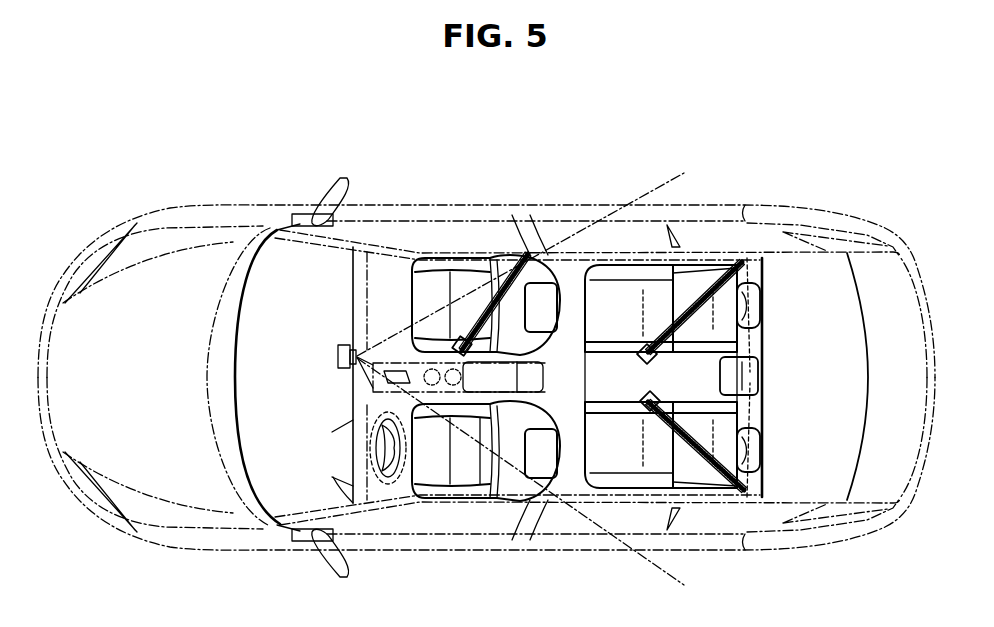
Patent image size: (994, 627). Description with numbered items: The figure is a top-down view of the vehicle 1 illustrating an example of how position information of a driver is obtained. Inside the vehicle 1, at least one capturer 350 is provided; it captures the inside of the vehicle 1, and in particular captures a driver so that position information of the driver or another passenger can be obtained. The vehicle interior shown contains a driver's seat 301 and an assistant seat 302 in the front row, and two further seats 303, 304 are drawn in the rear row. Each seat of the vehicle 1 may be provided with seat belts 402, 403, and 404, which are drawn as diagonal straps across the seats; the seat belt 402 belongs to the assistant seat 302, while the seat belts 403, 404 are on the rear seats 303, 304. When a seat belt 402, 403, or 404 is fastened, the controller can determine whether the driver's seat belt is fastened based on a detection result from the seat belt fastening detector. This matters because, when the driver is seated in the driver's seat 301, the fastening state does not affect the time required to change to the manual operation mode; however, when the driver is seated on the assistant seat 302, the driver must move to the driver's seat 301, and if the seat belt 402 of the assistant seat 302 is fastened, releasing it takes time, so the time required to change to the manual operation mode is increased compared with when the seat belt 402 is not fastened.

The vehicle 1 is at (152, 277).
The driver's seat 301 is at (452, 490).
The assistant seat 302 is at (452, 265).
The rear seat (left) 303 is at (632, 478).
The rear seat (right) 304 is at (632, 277).
The capturer 350 is at (337, 357).
The seat belt 402 is at (480, 290).
The seat belt 403 is at (713, 467).
The seat belt 404 is at (712, 268).